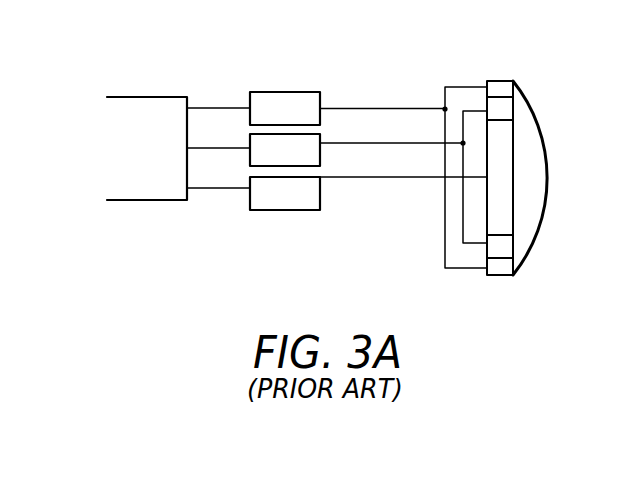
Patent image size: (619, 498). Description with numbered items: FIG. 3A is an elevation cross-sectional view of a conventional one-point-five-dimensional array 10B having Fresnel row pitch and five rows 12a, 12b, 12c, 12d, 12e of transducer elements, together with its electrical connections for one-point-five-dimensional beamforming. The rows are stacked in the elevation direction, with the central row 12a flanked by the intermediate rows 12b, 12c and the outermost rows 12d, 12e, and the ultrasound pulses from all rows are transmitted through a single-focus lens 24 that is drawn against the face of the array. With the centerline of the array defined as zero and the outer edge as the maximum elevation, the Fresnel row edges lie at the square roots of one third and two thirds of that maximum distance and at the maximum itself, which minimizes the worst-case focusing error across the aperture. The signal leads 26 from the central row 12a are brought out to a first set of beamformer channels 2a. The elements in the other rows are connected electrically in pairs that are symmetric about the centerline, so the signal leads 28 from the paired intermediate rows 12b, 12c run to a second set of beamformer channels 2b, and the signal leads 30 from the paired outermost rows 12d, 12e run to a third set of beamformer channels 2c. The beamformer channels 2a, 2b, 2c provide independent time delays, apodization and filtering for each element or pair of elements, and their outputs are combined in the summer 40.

The 1.5D array 10B is at (517, 162).
The central row of transducer elements 12a is at (510, 216).
The intermediate row of transducer elements 12b is at (505, 253).
The intermediate row of transducer elements 12c is at (505, 110).
The outermost row of transducer elements 12d is at (500, 271).
The outermost row of transducer elements 12e is at (498, 80).
The single-focus lens 24 is at (547, 162).
The signal leads 26 is at (382, 178).
The signal leads 28 is at (422, 143).
The signal leads 30 is at (422, 108).
The first set of beamformer channels 2a is at (265, 212).
The second set of beamformer channels 2b is at (248, 142).
The third set of beamformer channels 2c is at (273, 91).
The summer 40 is at (130, 96).